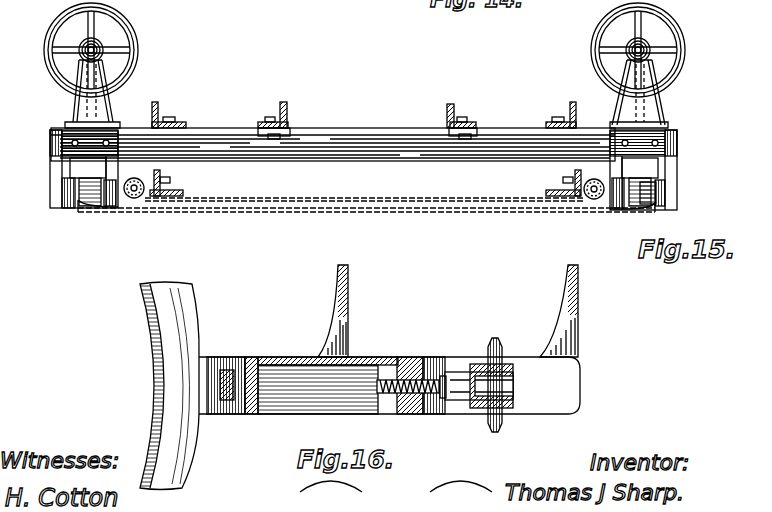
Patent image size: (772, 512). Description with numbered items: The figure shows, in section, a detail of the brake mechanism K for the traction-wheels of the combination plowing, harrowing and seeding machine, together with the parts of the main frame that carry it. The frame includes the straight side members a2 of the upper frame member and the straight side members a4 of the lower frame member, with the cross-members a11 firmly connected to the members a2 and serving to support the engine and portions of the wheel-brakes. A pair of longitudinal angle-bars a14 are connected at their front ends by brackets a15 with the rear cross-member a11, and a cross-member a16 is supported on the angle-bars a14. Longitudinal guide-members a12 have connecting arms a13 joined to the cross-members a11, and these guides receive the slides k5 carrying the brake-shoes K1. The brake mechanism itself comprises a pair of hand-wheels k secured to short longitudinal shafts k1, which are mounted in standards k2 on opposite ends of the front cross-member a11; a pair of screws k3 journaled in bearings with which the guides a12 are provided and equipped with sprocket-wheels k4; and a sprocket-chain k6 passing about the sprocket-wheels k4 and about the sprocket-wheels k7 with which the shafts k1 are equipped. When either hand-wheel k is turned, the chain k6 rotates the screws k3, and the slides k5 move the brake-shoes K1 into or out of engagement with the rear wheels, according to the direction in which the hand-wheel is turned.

In FIG. 15, the hand-wheel k is at (130, 50).
In FIG. 15, the short longitudinal shaft k1 is at (93, 48).
In FIG. 15, the standard k2 is at (97, 110).
In FIG. 15, the brake mechanism K is at (364, 86).
In FIG. 15, the sprocket-wheel k7 is at (655, 44).
In FIG. 15, the cross-member a11 is at (340, 129).
In FIG. 15, the straight side member a2 is at (160, 108).
In FIG. 15, the longitudinal angle-bar a14 is at (287, 105).
In FIG. 15, the cross-member a16 is at (470, 100).
In FIG. 15, the bracket a15 is at (282, 138).
In FIG. 15, the connecting arm a13 is at (72, 133).
In FIG. 16, the connecting arm a13 is at (348, 306).
In FIG. 15, the sprocket-wheel k4 is at (66, 183).
In FIG. 16, the sprocket-wheel k4 is at (502, 341).
In FIG. 15, the longitudinal guide-member a12 is at (668, 193).
In FIG. 16, the longitudinal guide-member a12 is at (420, 357).
In FIG. 15, the straight side member a4 is at (176, 187).
In FIG. 15, the sprocket-chain k6 is at (448, 213).
In FIG. 16, the brake-shoe K1 is at (192, 320).
In FIG. 16, the slide k5 is at (272, 357).
In FIG. 16, the screw k3 is at (455, 411).